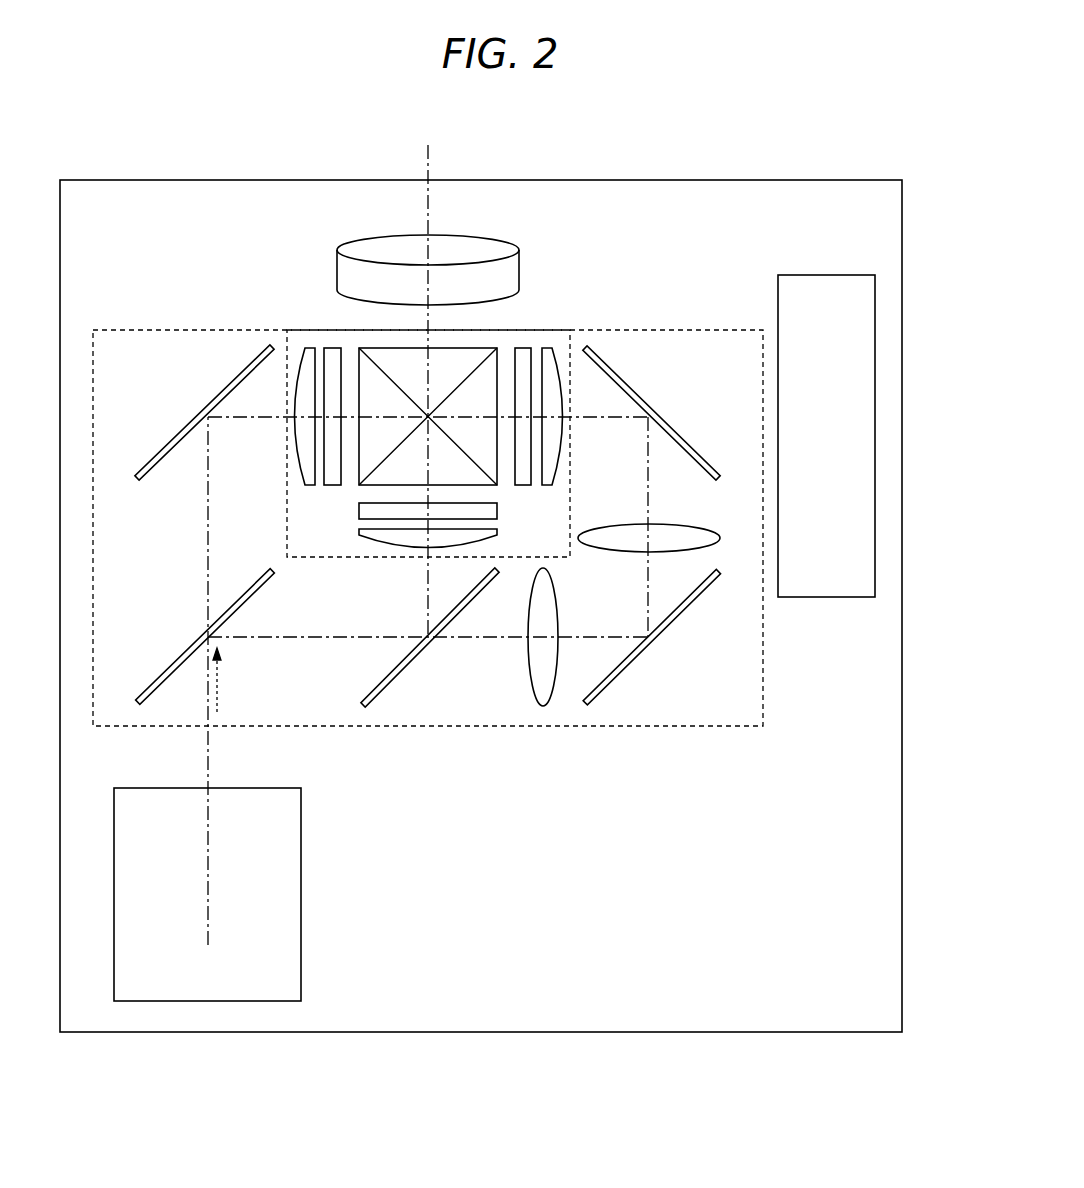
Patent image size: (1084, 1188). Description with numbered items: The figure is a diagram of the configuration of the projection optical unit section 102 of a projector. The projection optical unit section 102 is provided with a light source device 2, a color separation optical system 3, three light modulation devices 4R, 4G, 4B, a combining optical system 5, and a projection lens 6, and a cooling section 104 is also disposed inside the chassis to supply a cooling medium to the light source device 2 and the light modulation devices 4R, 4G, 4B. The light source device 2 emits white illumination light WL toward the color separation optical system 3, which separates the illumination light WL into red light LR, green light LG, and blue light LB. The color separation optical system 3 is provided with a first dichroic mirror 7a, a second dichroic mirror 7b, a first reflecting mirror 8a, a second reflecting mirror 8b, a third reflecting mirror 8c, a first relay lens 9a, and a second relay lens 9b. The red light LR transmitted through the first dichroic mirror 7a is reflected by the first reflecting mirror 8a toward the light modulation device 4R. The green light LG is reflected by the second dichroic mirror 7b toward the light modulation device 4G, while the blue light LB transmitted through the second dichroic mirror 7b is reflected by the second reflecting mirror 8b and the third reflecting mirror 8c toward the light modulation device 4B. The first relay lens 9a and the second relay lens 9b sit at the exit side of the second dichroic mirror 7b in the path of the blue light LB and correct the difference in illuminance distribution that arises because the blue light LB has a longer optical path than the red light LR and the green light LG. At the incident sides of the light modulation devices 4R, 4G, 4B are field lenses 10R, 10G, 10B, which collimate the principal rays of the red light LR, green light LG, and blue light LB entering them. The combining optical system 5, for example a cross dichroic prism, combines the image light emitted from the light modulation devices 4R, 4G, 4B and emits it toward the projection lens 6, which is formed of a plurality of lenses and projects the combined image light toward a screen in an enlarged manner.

The projection optical unit section 102 is at (903, 196).
The cooling section 104 is at (834, 598).
The light source device 2 is at (301, 860).
The color separation optical system 3 is at (123, 329).
The combining optical system 5 is at (452, 356).
The projection lens 6 is at (407, 243).
The light modulation device 4R is at (331, 345).
The light modulation device 4G is at (365, 511).
The light modulation device 4B is at (524, 345).
The field lens 10R is at (308, 345).
The field lens 10G is at (362, 537).
The field lens 10B is at (546, 345).
The first dichroic mirror 7a is at (170, 665).
The second dichroic mirror 7b is at (407, 667).
The first reflecting mirror 8a is at (182, 430).
The second reflecting mirror 8b is at (675, 622).
The third reflecting mirror 8c is at (678, 435).
The first relay lens 9a is at (527, 657).
The second relay lens 9b is at (675, 525).
The red light LR is at (207, 548).
The green light LG is at (427, 593).
The blue light LB is at (647, 594).
The illumination light WL is at (219, 690).